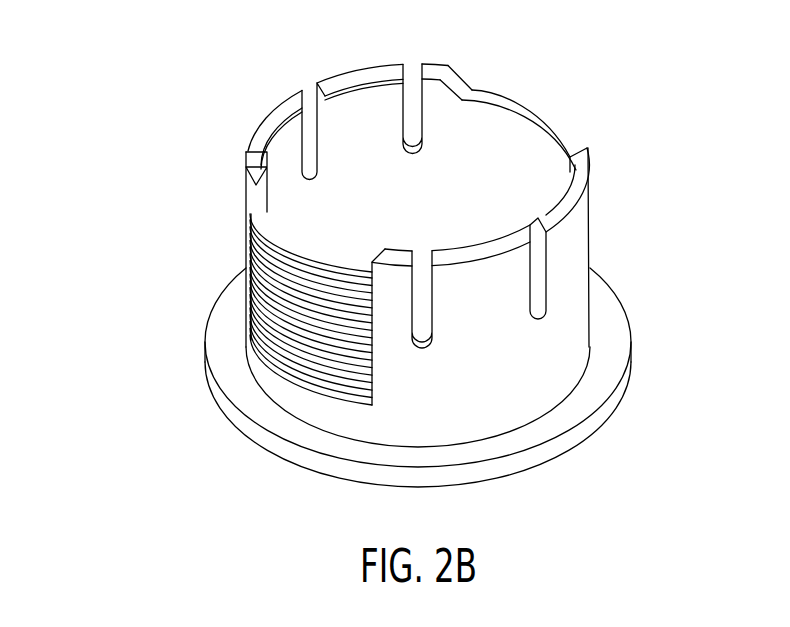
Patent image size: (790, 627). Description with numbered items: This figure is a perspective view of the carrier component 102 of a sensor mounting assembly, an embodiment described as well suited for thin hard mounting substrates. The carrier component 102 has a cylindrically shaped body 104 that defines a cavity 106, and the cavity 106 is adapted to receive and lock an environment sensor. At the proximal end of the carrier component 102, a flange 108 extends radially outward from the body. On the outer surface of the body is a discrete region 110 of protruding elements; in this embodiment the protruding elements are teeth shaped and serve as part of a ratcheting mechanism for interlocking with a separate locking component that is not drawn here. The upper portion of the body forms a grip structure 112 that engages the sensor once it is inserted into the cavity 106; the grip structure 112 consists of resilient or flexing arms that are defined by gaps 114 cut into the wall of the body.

The carrier component 102 is at (147, 448).
The cylindrically shaped body 104 is at (592, 227).
The cavity 106 is at (510, 150).
The flange 108 is at (632, 340).
The discrete region of protruding elements 110 is at (248, 232).
The grip structure 112 is at (280, 118).
The gaps 114 is at (420, 90).